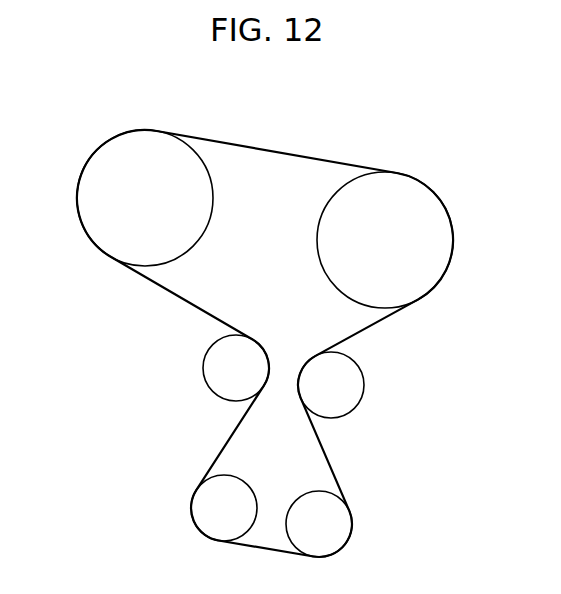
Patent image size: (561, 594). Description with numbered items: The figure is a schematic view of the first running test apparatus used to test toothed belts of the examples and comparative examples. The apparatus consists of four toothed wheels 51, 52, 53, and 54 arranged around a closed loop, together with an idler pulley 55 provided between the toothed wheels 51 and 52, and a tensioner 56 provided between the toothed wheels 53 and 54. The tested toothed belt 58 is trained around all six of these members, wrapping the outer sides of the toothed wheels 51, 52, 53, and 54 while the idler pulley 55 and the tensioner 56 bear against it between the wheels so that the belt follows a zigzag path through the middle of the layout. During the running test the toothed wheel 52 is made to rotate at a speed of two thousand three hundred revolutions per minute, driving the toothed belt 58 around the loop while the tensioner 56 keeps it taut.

The toothed wheel 51 is at (100, 172).
The toothed wheel 52 is at (206, 507).
The toothed wheel 53 is at (338, 530).
The toothed wheel 54 is at (435, 245).
The idler pulley 55 is at (218, 380).
The tensioner 56 is at (350, 383).
The toothed belt 58 is at (168, 303).